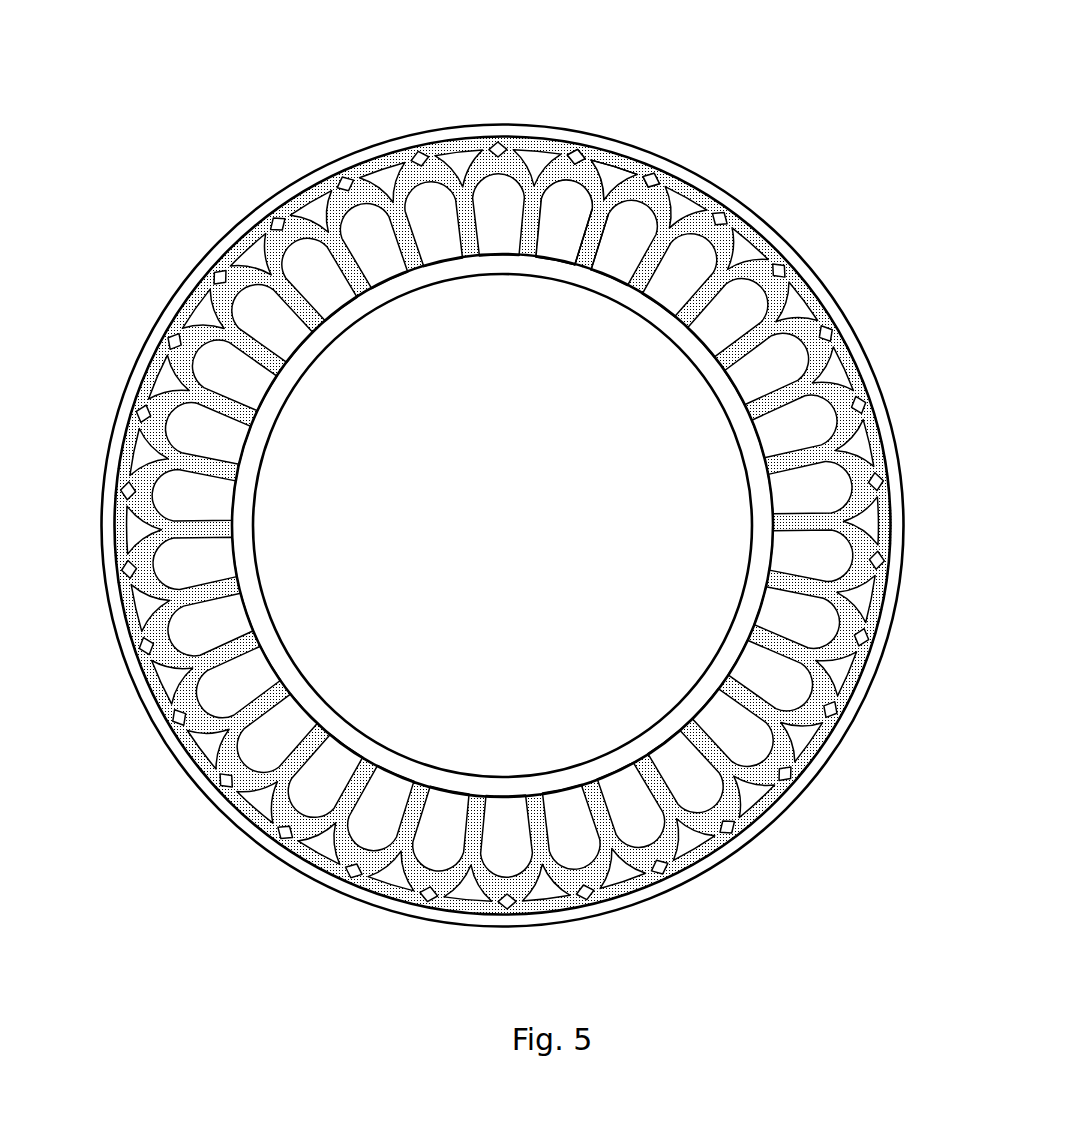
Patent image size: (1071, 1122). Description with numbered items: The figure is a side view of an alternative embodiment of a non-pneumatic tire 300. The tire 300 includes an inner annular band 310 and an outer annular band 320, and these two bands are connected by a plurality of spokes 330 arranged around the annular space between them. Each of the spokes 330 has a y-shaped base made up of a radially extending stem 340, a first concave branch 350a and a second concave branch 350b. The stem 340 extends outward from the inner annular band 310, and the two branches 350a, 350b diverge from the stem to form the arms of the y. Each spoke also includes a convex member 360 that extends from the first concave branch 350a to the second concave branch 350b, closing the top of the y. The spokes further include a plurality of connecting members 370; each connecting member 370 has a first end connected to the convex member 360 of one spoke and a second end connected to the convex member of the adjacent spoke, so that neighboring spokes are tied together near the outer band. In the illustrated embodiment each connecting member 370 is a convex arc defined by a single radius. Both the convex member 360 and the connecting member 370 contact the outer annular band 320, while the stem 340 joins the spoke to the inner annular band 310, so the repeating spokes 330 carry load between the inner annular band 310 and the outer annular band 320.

The non-pneumatic tire 300 is at (888, 94).
The inner annular band 310 is at (243, 500).
The outer annular band 320 is at (313, 177).
The spokes 330 is at (178, 347).
The radially extending stem 340 is at (587, 243).
The first concave branch 350a is at (595, 183).
The second concave branch 350b is at (627, 192).
The convex member 360 is at (623, 165).
The connecting member 370 is at (797, 266).